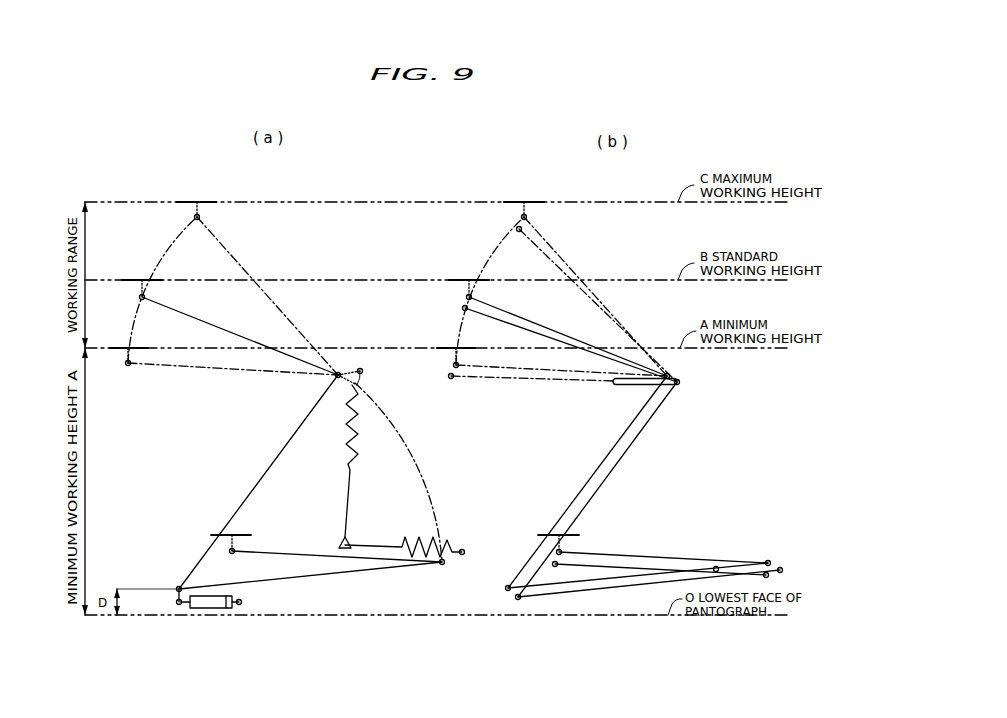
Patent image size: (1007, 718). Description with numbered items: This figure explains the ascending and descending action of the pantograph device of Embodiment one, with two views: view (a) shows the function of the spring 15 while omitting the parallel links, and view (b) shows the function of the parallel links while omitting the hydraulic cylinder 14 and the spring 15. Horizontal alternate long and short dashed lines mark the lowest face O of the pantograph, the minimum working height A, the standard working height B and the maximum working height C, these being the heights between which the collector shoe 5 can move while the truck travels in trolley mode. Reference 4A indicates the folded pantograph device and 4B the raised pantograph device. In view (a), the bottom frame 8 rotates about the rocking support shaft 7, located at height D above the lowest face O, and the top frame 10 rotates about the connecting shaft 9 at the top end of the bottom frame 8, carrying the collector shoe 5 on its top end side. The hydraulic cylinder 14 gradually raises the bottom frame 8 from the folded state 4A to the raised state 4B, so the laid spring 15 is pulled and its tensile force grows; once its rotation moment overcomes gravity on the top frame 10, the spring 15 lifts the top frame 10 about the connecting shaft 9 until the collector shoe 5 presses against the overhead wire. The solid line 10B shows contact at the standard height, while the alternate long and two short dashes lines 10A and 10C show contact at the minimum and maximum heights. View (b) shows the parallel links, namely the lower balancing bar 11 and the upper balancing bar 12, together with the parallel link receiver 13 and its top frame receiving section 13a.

The folded pantograph device 4A is at (372, 580).
The raised pantograph device 4B is at (266, 457).
The collector shoe 5 is at (189, 201).
The rocking support shaft 7 is at (178, 586).
The bottom frame 8 is at (290, 445).
The connecting shaft 9 is at (343, 371).
The top frame 10 is at (228, 329).
The top frame position at minimum working height 10A is at (197, 367).
The top frame position at standard working height 10B is at (176, 307).
The top frame position at maximum working height 10C is at (240, 254).
The lower balancing bar 11 is at (608, 472).
The upper balancing bar 12 is at (508, 324).
The parallel link receiver 13 is at (684, 381).
The top frame receiving section 13a is at (618, 386).
The hydraulic cylinder 14 is at (210, 610).
The spring 15 is at (356, 431).